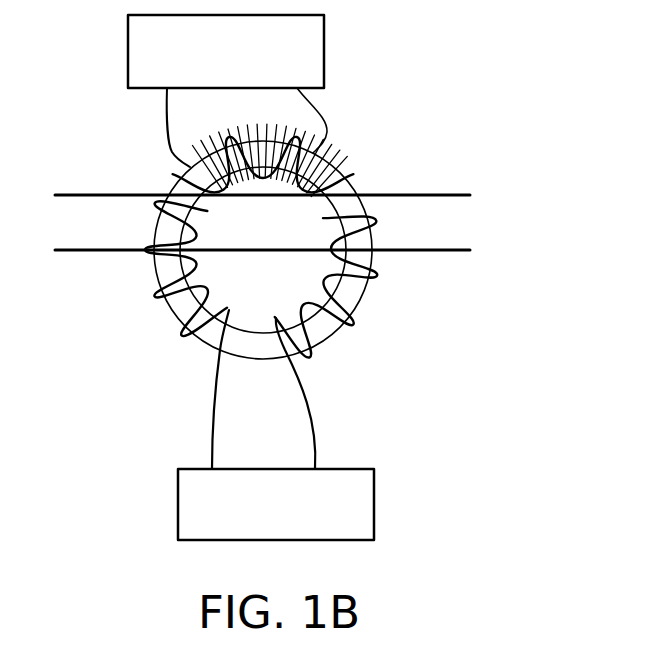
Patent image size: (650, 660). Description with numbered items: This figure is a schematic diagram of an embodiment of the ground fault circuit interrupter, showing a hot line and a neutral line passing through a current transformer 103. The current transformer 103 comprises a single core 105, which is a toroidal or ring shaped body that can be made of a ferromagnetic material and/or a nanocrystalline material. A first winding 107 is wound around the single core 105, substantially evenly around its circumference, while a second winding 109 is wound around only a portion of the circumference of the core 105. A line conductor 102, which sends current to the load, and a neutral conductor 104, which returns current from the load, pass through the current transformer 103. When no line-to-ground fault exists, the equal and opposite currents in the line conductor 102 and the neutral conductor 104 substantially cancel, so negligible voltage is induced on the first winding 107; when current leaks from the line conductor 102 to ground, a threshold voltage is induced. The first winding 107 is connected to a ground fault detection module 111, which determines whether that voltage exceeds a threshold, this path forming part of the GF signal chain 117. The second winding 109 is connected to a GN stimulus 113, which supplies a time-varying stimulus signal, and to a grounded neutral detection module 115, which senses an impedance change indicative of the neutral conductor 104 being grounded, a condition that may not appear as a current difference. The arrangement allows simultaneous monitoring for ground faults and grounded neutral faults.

The line conductor 102 is at (423, 194).
The current transformer 103 is at (138, 310).
The neutral conductor 104 is at (445, 252).
The single core 105 is at (208, 335).
The first winding 107 is at (347, 325).
The second winding 109 is at (285, 126).
The ground fault detection module 111 is at (276, 425).
The GN stimulus 113 is at (227, 91).
The grounded neutral detection module 115 is at (173, 68).
The GF signal chain 117 is at (223, 520).